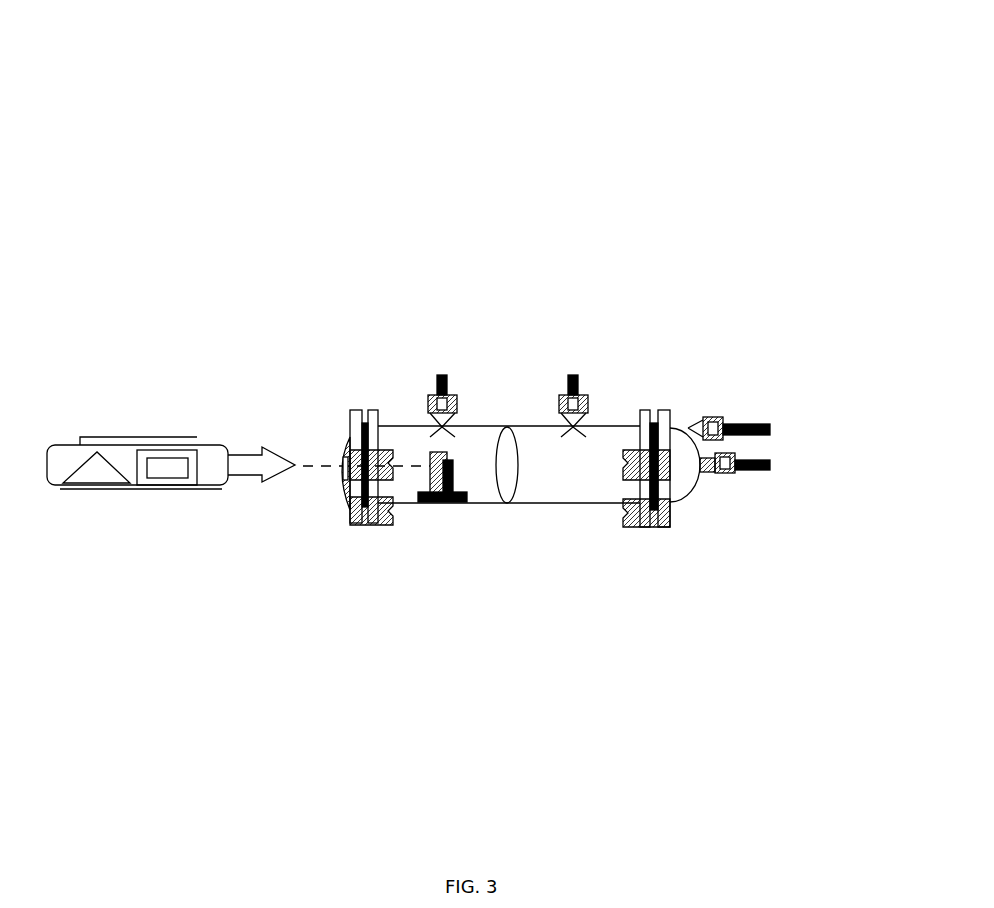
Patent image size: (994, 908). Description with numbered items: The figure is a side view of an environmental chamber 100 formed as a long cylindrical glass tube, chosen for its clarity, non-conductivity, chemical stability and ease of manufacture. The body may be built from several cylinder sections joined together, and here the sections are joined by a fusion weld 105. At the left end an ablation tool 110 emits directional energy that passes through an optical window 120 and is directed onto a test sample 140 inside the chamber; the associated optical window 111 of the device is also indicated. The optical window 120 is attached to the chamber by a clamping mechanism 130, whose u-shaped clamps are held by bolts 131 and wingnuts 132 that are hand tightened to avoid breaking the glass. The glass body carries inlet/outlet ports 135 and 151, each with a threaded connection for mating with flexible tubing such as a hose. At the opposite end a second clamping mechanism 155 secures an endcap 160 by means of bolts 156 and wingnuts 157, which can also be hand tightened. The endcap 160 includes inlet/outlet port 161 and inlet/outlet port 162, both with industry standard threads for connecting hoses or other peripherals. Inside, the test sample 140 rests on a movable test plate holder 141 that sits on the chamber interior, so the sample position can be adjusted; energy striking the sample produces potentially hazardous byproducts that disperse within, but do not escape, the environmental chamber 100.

The environmental chamber 100 is at (550, 333).
The fusion weld 105 is at (517, 466).
The ablation tool 110 is at (72, 462).
The optical window 111 is at (303, 463).
The optical window 120 is at (343, 483).
The clamping mechanism 130 is at (352, 433).
The bolts 131 is at (350, 520).
The wingnuts 132 is at (378, 528).
The inlet/outlet port 135 is at (437, 421).
The test sample 140 is at (444, 492).
The movable test plate holder 141 is at (457, 488).
The inlet/outlet port 151 is at (585, 412).
The clamping mechanism 155 is at (670, 493).
The bolts 156 is at (663, 510).
The wingnuts 157 is at (637, 527).
The endcap 160 is at (683, 470).
The inlet/outlet port 161 is at (703, 468).
The inlet/outlet port 162 is at (695, 422).